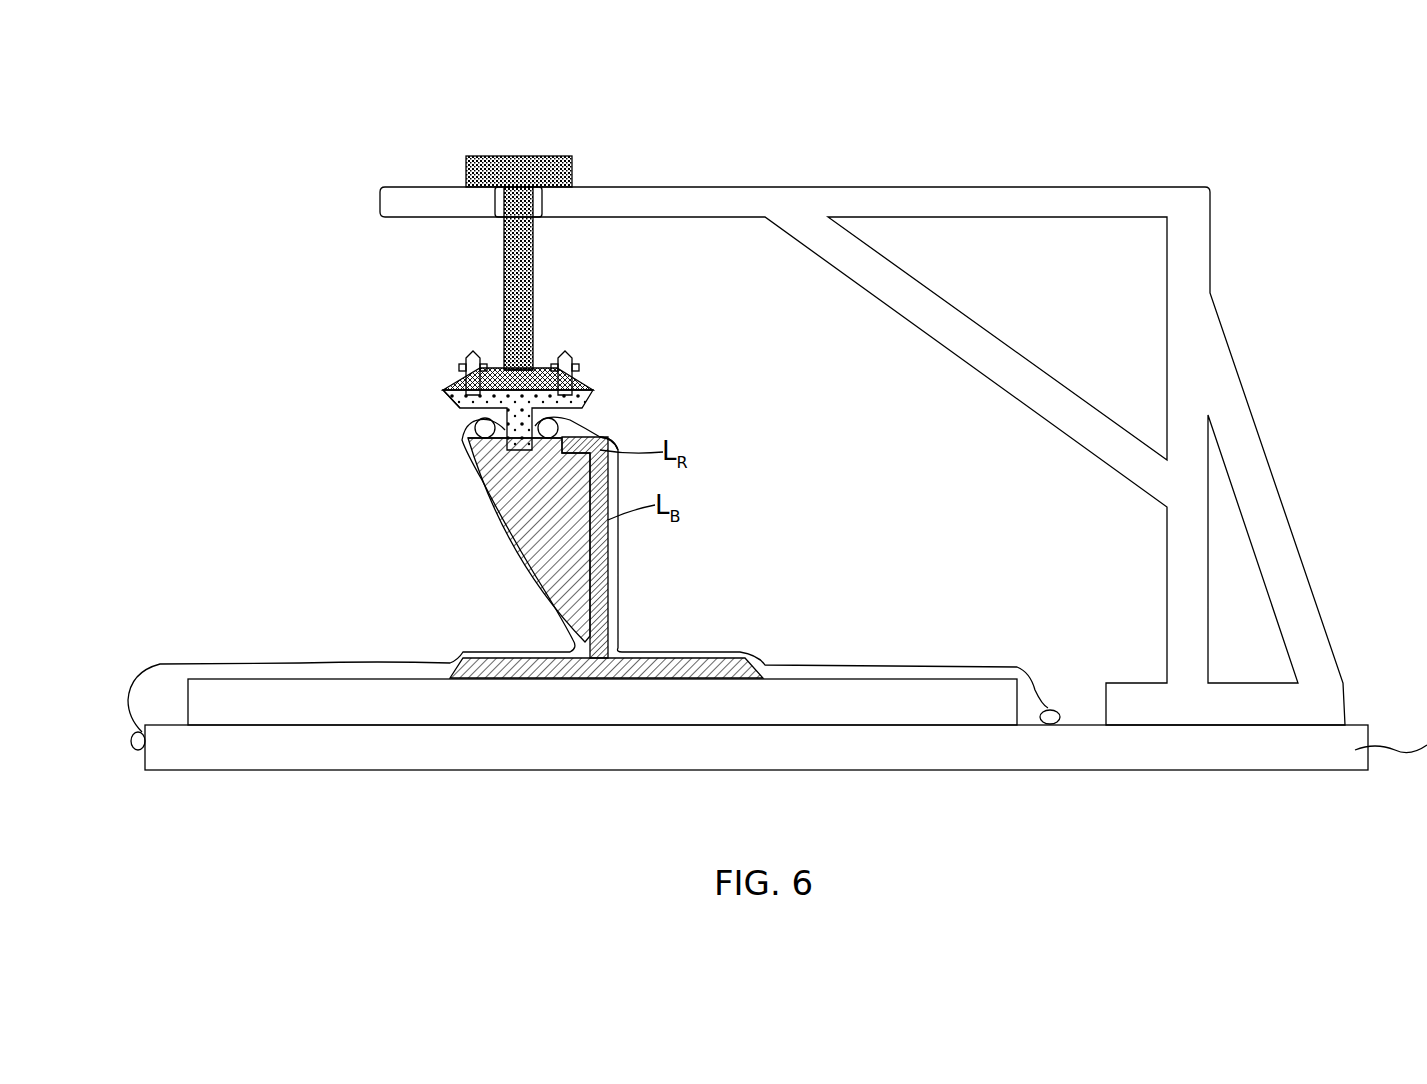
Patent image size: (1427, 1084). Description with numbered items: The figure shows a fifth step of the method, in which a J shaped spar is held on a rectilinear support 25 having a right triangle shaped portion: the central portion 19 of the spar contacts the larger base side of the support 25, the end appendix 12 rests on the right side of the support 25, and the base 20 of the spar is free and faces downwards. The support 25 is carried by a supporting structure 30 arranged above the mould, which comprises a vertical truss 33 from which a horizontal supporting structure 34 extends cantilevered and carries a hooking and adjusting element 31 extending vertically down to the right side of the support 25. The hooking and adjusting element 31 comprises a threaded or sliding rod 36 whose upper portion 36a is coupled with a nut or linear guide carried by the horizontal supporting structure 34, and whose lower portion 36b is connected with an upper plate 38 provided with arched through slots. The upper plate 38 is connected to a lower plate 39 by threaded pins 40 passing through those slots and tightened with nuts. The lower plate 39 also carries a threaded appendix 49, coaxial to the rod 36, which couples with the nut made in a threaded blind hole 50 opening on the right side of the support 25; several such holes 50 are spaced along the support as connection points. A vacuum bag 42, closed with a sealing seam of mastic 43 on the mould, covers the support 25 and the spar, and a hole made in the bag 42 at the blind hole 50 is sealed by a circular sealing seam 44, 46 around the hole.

The supporting structure 30 is at (797, 150).
The horizontal supporting structure 34 is at (978, 185).
The vertical truss 33 is at (1257, 320).
The upper portion of rod 36a is at (561, 155).
The threaded or sliding rod 36 is at (505, 256).
The lower portion of rod 36b is at (535, 368).
The hooking and adjusting element 31 is at (539, 339).
The upper plate 38 is at (596, 378).
The sealing seam 44 is at (480, 410).
The threaded pins 40 is at (472, 350).
The lower plate 39 is at (457, 392).
The sealing seam 46 is at (550, 420).
The rectilinear support 25 is at (588, 557).
The threaded blind hole 50 is at (529, 540).
The central portion of the spar 19 is at (608, 575).
The base of the spar 20 is at (688, 667).
The threaded appendix 49 is at (476, 448).
The vacuum bag 42 is at (275, 660).
The end appendix 12 is at (600, 432).
The sealing seam of mastic 43 is at (132, 750).